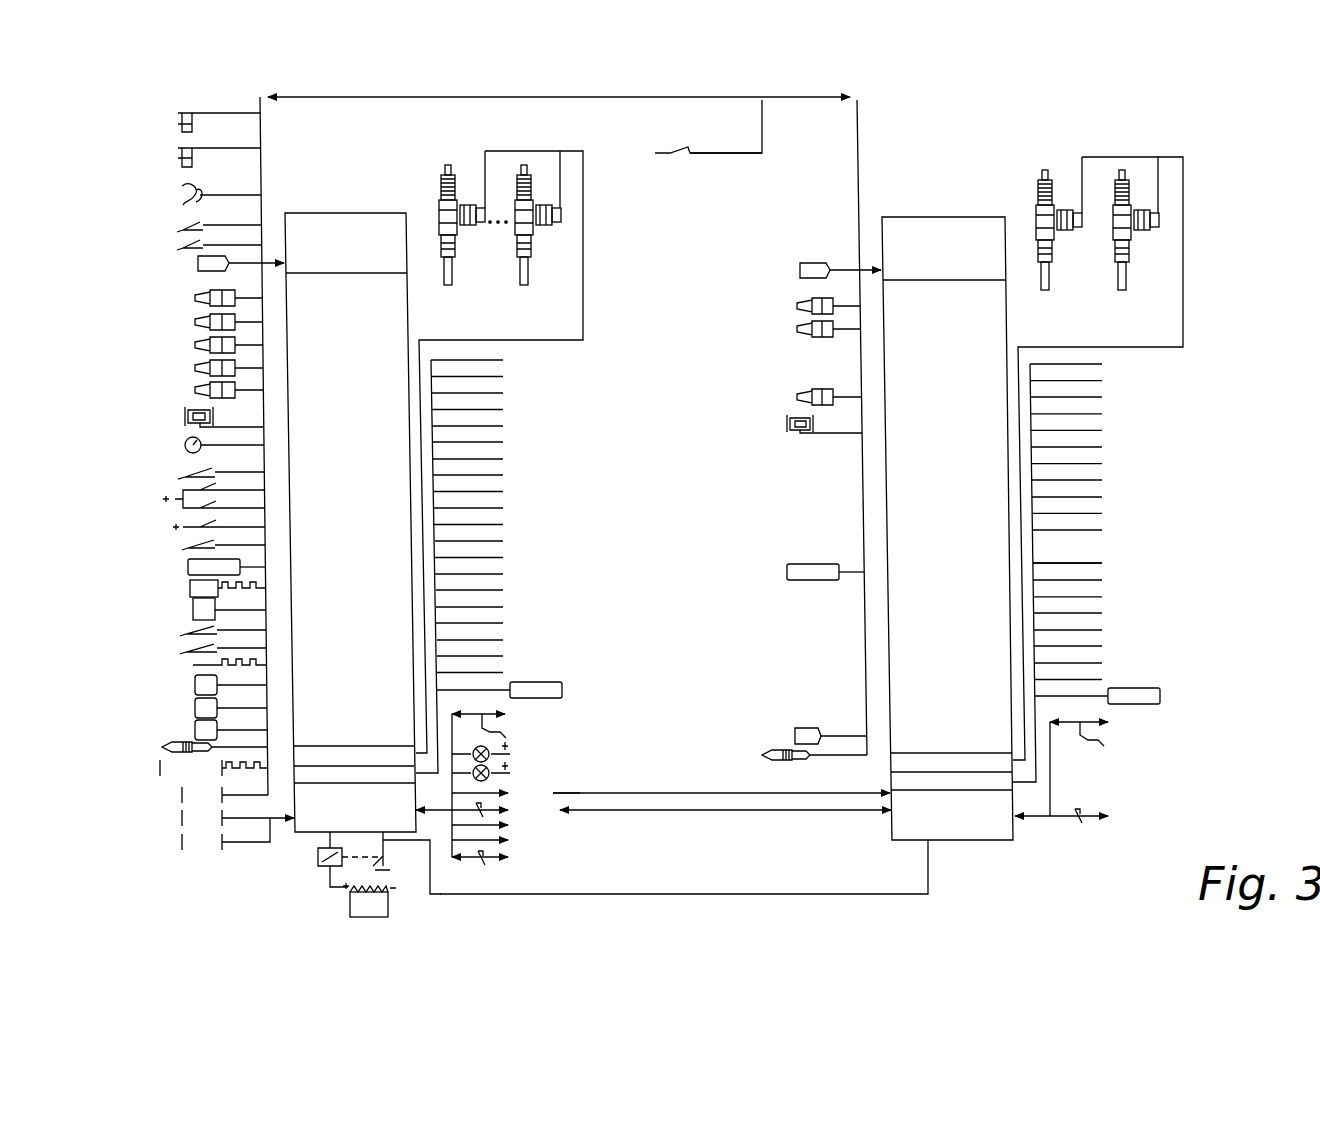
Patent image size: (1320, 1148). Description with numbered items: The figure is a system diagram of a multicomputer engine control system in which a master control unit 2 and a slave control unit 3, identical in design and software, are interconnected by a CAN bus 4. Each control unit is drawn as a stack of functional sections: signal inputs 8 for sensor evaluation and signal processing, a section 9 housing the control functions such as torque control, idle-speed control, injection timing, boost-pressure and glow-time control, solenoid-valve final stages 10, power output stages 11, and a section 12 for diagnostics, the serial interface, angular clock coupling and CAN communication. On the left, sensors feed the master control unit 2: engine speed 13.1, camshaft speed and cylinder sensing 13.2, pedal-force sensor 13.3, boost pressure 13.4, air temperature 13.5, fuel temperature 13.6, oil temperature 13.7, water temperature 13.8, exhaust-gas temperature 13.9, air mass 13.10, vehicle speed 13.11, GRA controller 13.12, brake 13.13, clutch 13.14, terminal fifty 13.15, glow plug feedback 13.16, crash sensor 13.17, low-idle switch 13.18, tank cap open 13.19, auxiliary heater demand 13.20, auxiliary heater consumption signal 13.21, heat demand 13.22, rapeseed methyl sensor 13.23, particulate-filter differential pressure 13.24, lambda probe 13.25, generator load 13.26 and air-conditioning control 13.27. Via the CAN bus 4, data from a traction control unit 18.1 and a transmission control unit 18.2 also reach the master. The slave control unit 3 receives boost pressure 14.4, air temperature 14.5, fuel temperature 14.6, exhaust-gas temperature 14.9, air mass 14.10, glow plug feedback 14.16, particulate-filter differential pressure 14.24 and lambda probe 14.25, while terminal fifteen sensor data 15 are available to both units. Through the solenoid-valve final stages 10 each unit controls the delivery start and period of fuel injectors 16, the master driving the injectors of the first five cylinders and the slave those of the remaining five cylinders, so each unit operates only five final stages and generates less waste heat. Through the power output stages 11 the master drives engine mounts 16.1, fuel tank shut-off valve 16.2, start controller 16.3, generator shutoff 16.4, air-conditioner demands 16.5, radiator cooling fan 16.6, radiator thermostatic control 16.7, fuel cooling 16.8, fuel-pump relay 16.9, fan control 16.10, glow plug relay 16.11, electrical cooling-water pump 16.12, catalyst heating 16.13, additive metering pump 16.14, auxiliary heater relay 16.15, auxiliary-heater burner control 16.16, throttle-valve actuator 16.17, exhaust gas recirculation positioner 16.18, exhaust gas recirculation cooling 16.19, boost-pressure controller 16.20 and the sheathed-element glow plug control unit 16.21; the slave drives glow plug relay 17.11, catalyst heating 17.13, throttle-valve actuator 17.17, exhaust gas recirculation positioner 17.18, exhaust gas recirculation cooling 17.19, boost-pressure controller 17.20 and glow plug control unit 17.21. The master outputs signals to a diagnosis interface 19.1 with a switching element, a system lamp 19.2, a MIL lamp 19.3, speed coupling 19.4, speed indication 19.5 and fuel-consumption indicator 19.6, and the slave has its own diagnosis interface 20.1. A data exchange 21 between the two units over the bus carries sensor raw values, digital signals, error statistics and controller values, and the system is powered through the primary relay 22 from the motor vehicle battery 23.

The master control unit 2 is at (315, 213).
The slave control unit 3 is at (912, 217).
The CAN bus 4 is at (495, 812).
The signal inputs 8 is at (360, 228).
The control functions 9 is at (366, 570).
The solenoid-valve final stages 10 is at (327, 748).
The power output stages 11 is at (357, 770).
The diagnostic and interface section 12 is at (387, 800).
The engine speed sensor 13.1 is at (190, 122).
The camshaft engine speed and cylinder sensing sensor 13.2 is at (190, 157).
The pedal-force sensor 13.3 is at (165, 251).
The boost pressure sensor 13.4 is at (202, 264).
The air temperature sensor 13.5 is at (191, 298).
The fuel temperature sensor 13.6 is at (191, 322).
The oil temperature sensor 13.7 is at (192, 345).
The water temperature sensor 13.8 is at (192, 368).
The exhaust-gas temperature sensor 13.9 is at (192, 390).
The air mass sensor 13.10 is at (188, 417).
The vehicle speed sensor 13.11 is at (188, 445).
The GRA controller 13.12 is at (188, 472).
The brake sensor 13.13 is at (189, 495).
The clutch sensor 13.14 is at (189, 527).
The terminal 50 13.15 is at (189, 545).
The sheathed-element glow plug feedback signal 13.16 is at (189, 567).
The crash sensor 13.17 is at (189, 588).
The low-idle switch 13.18 is at (189, 609).
The tank cap open sensor 13.19 is at (189, 630).
The auxiliary heater demand 13.20 is at (189, 648).
The auxiliary heater consumption signal 13.21 is at (189, 665).
The heat demand sensor 13.22 is at (189, 685).
The rapeseed methyl sensor 13.23 is at (190, 708).
The particulate-filter differential pressure sensor 13.24 is at (190, 730).
The lambda probe 13.25 is at (190, 747).
The generator load signal 13.26 is at (190, 768).
The air-conditioning control 13.27 is at (190, 795).
The boost pressure sensor 14.4 is at (823, 272).
The air temperature sensor 14.5 is at (813, 306).
The fuel temperature sensor 14.6 is at (813, 329).
The exhaust-gas temperature sensor 14.9 is at (814, 397).
The air mass sensor 14.10 is at (802, 424).
The sheathed-element glow plug feedback signal 14.16 is at (803, 572).
The particulate-filter differential pressure sensor 14.24 is at (809, 736).
The lambda probe 14.25 is at (792, 755).
The terminal 15 sensor data 15 is at (690, 153).
The fuel injectors 16 is at (520, 265).
The engine mounts actuator 16.1 is at (483, 361).
The fuel tank shut-off valve 16.2 is at (483, 377).
The start controller 16.3 is at (483, 394).
The generator shutoff 16.4 is at (483, 410).
The air-conditioner demands output 16.5 is at (483, 427).
The radiator cooling fan 16.6 is at (484, 443).
The radiator thermostatic control 16.7 is at (484, 460).
The fuel cooling actuator 16.8 is at (484, 476).
The fuel-pump relay 16.9 is at (484, 492).
The fan control 16.10 is at (488, 509).
The glow plug relay 16.11 is at (488, 525).
The electrical cooling-water pump 16.12 is at (488, 542).
The catalyst heating 16.13 is at (488, 558).
The additive metering pump 16.14 is at (488, 575).
The auxiliary heater relay 16.15 is at (489, 591).
The auxiliary-heater burner control 16.16 is at (489, 608).
The throttle-valve actuator 16.17 is at (489, 624).
The exhaust gas recirculation positioner 16.18 is at (489, 641).
The exhaust gas recirculation cooling 16.19 is at (489, 657).
The boost-pressure controller 16.20 is at (489, 673).
The sheathed-element glow plug control unit 16.21 is at (519, 690).
The glow plug relay 17.11 is at (1086, 531).
The catalyst heating 17.13 is at (1087, 564).
The throttle-valve actuator 17.17 is at (1087, 631).
The exhaust gas recirculation positioner 17.18 is at (1087, 647).
The exhaust gas recirculation cooling 17.19 is at (1088, 664).
The boost-pressure controller 17.20 is at (1088, 680).
The sheathed-element glow plug control unit 17.21 is at (1117, 696).
The traction control system control unit 18.1 is at (207, 818).
The transmission control unit 18.2 is at (195, 834).
The diagnosis interface 19.1 is at (497, 723).
The system lamp 19.2 is at (497, 752).
The MIL lamp 19.3 is at (497, 771).
The speed coupling 19.4 is at (671, 794).
The speed indication 19.5 is at (497, 826).
The fuel-consumption indicator 19.6 is at (497, 841).
The diagnosis interface 20.1 is at (1096, 766).
The data exchange 21 is at (755, 815).
The primary relay 22 is at (318, 866).
The motor vehicle battery 23 is at (348, 896).